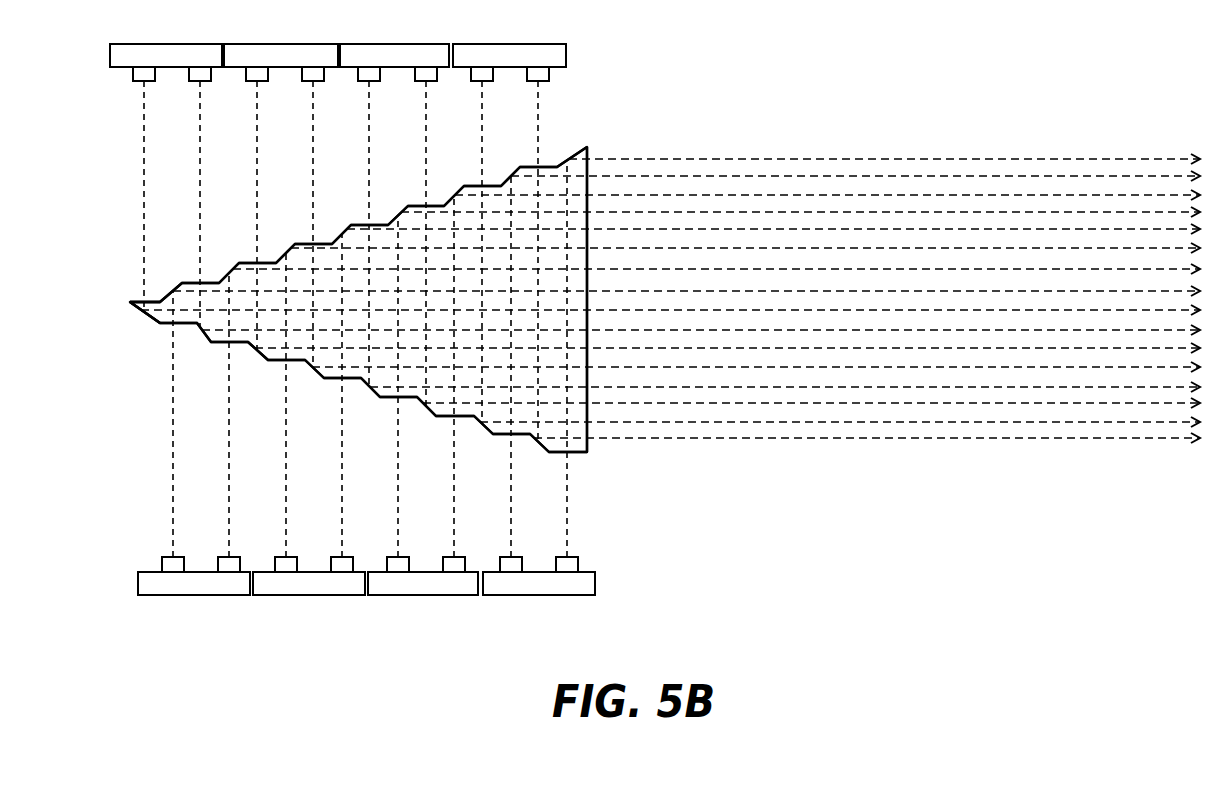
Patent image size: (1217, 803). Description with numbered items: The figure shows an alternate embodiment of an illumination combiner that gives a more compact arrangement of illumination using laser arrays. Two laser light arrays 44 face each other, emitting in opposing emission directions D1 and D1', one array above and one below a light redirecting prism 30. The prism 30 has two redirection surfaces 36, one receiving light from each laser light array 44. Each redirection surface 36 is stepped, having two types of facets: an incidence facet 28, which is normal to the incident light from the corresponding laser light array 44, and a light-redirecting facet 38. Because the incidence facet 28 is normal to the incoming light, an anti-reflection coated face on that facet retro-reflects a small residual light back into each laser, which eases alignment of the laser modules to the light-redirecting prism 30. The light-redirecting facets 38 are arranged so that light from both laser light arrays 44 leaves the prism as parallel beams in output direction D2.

The incidence facet 28 is at (168, 325).
The light redirecting prism 30 is at (140, 305).
The redirection surface 36 is at (537, 167).
The light-redirecting facet 38 is at (566, 161).
The laser light array 44 is at (142, 46).
The emission direction D1 is at (333, 358).
The emission direction D1' is at (298, 261).
The output direction D2 is at (688, 440).